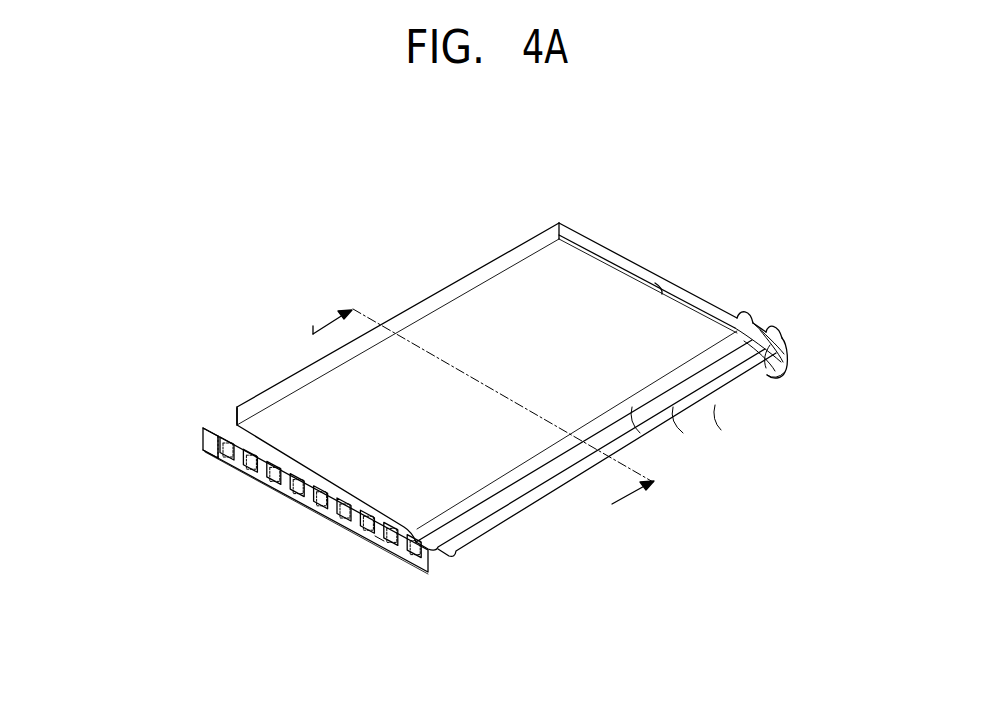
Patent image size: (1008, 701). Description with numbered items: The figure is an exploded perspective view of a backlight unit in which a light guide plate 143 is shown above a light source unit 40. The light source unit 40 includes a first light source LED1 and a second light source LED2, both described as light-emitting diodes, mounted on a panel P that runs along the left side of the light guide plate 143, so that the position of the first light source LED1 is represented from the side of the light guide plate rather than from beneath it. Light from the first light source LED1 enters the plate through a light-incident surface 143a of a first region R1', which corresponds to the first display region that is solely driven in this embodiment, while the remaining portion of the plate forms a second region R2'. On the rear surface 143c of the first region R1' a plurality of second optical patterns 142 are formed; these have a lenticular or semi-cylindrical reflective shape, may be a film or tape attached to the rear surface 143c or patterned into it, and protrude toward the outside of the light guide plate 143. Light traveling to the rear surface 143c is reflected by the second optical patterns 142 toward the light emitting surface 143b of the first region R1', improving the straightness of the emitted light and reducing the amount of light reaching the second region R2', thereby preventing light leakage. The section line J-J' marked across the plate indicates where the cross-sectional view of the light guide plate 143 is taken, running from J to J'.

The light guide plate 143 is at (463, 289).
The light-incident surface 143a is at (235, 412).
The light emitting surface 143b is at (752, 323).
The rear surface 143c is at (768, 377).
The second optical patterns 142 is at (640, 433).
The light source unit 40 is at (262, 526).
The first light source LED1 is at (411, 558).
The second light source LED2 is at (293, 498).
The panel P is at (378, 543).
The first region R1' is at (787, 343).
The second region R2' is at (666, 271).
The section line J-J' J is at (503, 422).
The section line J- J' is at (325, 336).